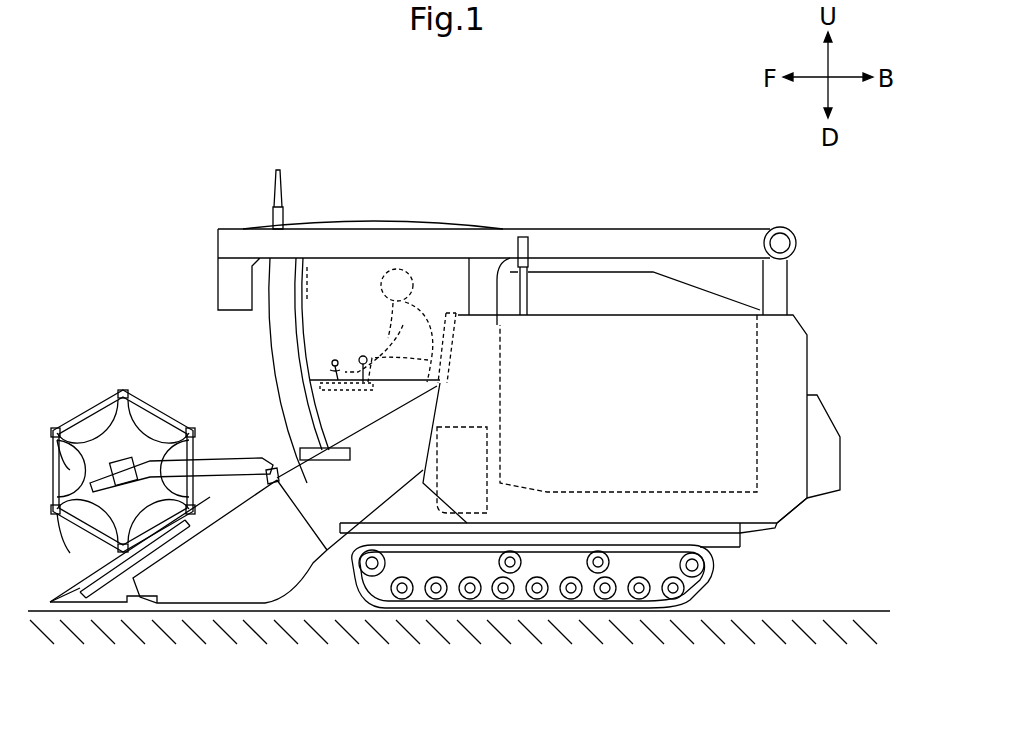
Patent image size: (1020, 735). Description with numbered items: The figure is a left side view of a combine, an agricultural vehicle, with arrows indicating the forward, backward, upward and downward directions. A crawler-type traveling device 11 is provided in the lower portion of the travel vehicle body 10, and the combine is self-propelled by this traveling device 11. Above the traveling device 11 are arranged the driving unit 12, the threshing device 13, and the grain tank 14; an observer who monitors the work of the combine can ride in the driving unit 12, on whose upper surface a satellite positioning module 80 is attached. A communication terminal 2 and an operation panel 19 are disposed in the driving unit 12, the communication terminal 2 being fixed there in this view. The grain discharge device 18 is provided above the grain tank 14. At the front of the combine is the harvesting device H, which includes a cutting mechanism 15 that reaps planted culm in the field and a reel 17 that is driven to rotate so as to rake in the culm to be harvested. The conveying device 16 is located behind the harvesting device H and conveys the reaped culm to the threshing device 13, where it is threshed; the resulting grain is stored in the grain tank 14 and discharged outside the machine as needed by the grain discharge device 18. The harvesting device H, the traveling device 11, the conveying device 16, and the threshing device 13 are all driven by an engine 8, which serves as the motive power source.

The communication terminal 2 is at (305, 268).
The satellite positioning module 80 is at (281, 189).
The grain tank 14 is at (590, 284).
The grain discharge device 18 is at (681, 238).
The threshing device 13 is at (787, 357).
The engine 8 is at (462, 427).
The driving unit 12 is at (340, 313).
The operation panel 19 is at (352, 392).
The travel vehicle body 10 is at (800, 527).
The crawler-type traveling device 11 is at (700, 587).
The conveying device 16 is at (306, 482).
The harvesting device H is at (130, 384).
The reel 17 is at (70, 408).
The cutting mechanism 15 is at (132, 607).